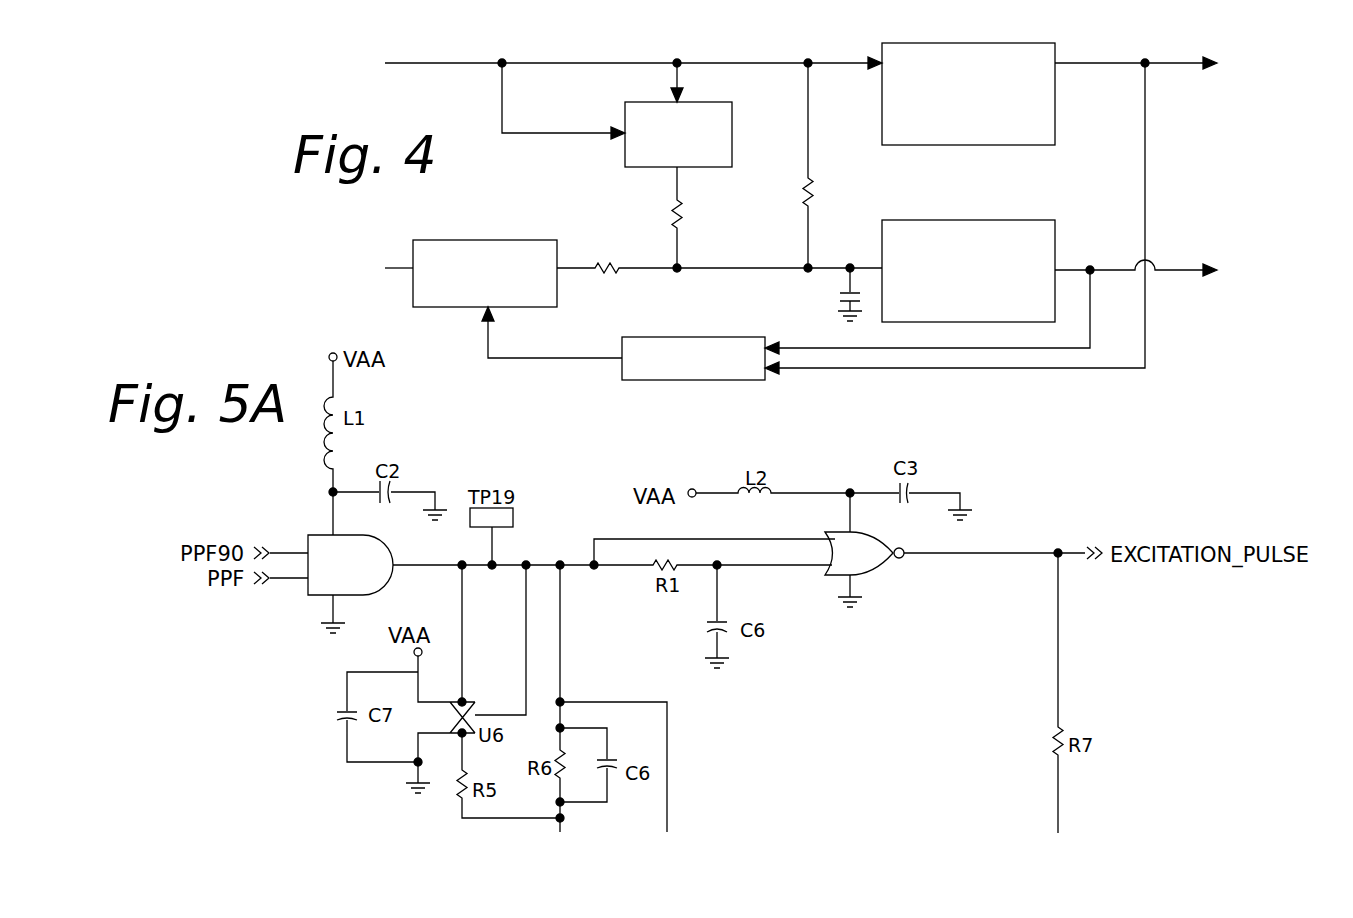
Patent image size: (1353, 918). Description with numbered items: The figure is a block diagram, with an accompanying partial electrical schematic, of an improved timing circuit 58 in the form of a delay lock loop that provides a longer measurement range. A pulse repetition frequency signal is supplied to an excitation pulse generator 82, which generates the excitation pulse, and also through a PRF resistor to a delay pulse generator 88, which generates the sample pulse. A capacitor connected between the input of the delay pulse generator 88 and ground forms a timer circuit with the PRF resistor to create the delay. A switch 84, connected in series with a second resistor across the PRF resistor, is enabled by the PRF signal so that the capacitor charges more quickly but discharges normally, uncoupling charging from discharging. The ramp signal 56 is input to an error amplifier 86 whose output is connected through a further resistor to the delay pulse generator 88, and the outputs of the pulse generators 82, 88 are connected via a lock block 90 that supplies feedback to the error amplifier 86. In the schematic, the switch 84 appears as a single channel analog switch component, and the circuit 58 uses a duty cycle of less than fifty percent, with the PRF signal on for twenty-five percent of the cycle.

In FIG. 4, the ramp signal 56 is at (377, 316).
In FIG. 4, the timing circuit 58 is at (1070, 41).
In FIG. 4, the excitation pulse generator 82 is at (1050, 118).
In FIG. 5A, the excitation pulse generator 82 is at (915, 580).
In FIG. 4, the switch 84 is at (732, 135).
In FIG. 4, the error amplifier 86 is at (522, 240).
In FIG. 4, the delay pulse generator 88 is at (985, 220).
In FIG. 4, the lock block 90 is at (745, 380).